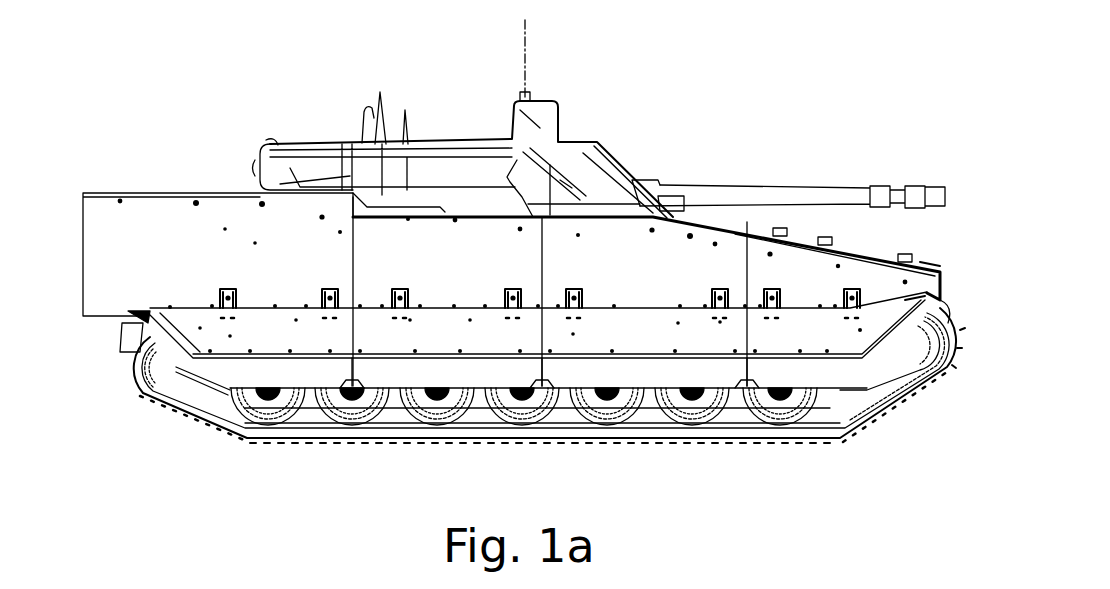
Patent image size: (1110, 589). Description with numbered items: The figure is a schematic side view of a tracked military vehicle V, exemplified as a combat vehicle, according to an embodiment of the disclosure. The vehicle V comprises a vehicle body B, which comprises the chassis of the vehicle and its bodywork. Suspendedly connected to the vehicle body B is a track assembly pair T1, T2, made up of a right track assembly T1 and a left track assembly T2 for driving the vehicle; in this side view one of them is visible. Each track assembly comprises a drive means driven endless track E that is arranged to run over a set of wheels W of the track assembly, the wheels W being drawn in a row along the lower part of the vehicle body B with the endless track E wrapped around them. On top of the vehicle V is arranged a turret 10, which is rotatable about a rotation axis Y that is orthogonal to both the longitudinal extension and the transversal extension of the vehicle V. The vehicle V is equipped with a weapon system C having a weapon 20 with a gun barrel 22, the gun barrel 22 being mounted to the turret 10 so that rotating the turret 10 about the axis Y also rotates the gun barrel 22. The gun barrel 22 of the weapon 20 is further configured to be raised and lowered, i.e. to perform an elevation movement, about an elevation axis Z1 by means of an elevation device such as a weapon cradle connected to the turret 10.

The turret 10 is at (463, 119).
The vehicle body B is at (176, 192).
The rotation axis Y is at (524, 72).
The elevation axis Z1 is at (580, 188).
The tracked military vehicle V is at (513, 255).
The weapon system C is at (786, 148).
The weapon 20 is at (788, 161).
The gun barrel 22 is at (758, 187).
The wheels W is at (136, 372).
The right track assembly T1 is at (241, 434).
The left track assembly T2 is at (522, 408).
The endless track E is at (871, 414).